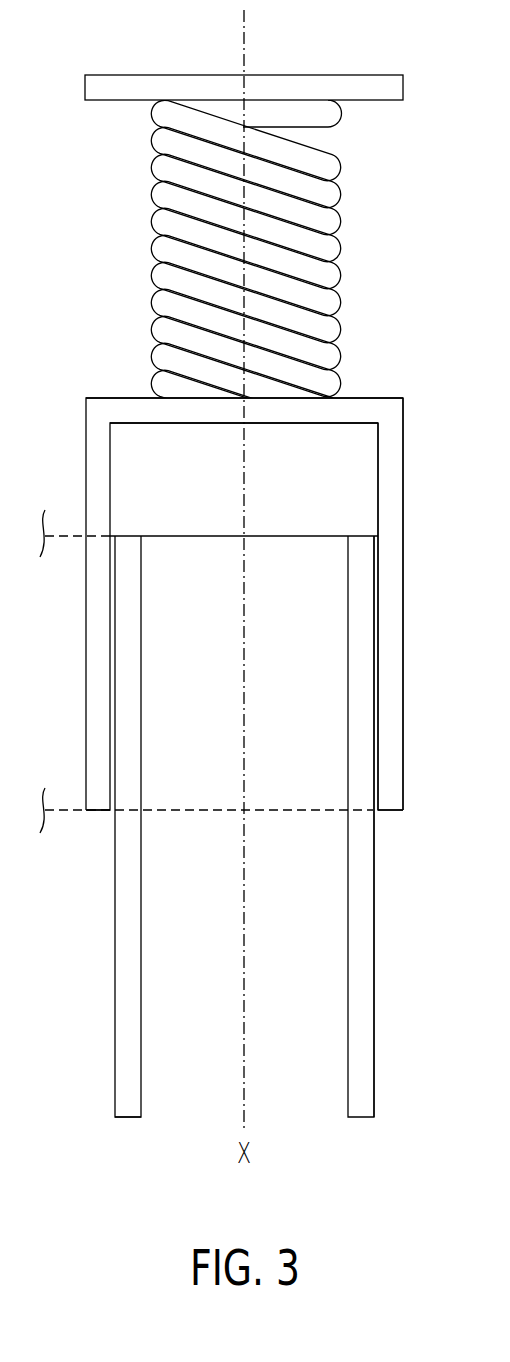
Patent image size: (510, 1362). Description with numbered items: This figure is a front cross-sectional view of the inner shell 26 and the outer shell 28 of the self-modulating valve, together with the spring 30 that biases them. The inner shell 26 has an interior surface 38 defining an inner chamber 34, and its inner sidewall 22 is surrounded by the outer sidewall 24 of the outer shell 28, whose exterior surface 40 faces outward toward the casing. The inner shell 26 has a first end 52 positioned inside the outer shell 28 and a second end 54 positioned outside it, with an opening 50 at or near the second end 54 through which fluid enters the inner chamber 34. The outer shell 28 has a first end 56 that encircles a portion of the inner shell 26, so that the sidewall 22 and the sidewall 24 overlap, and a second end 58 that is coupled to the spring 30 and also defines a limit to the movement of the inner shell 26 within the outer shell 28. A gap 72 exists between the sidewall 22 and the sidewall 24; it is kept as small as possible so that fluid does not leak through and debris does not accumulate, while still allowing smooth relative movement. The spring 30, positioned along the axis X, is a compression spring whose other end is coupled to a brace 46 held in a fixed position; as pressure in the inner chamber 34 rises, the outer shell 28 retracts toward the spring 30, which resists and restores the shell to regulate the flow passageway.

The inner sidewall 22 is at (363, 772).
The outer sidewall 24 is at (388, 697).
The inner shell 26 is at (374, 955).
The outer shell 28 is at (407, 417).
The spring 30 is at (342, 230).
The inner chamber 34 is at (304, 657).
The interior surface 38 is at (141, 657).
The exterior surface 40 is at (403, 590).
The brace 46 is at (374, 74).
The opening 50 is at (205, 1118).
The first end 52 is at (178, 535).
The second end 54 is at (132, 1117).
The first end 56 is at (92, 815).
The second end 58 is at (103, 398).
The gap 72 is at (377, 812).